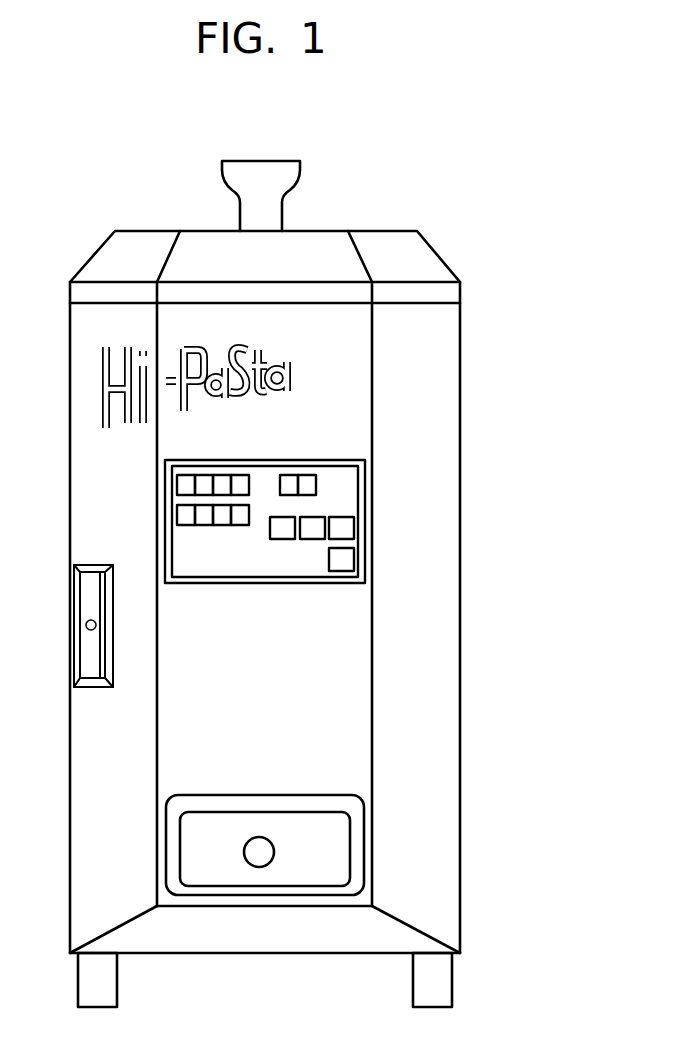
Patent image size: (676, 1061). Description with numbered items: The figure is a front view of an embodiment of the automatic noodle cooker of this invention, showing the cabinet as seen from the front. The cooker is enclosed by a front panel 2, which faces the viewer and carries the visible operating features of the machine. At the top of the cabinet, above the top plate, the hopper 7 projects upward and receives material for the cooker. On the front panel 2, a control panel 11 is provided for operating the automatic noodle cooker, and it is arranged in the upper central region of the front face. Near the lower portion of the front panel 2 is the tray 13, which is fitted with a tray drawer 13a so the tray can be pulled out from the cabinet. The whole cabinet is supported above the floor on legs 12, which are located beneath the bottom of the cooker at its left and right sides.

The front panel 2 is at (425, 378).
The hopper 7 is at (300, 186).
The control panel 11 is at (365, 517).
The legs 12 is at (437, 977).
The tray 13 is at (315, 868).
The tray drawer 13a is at (256, 860).